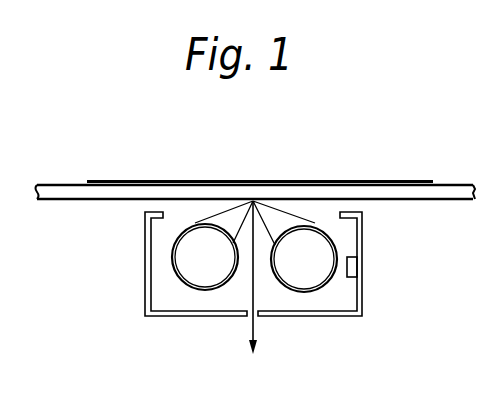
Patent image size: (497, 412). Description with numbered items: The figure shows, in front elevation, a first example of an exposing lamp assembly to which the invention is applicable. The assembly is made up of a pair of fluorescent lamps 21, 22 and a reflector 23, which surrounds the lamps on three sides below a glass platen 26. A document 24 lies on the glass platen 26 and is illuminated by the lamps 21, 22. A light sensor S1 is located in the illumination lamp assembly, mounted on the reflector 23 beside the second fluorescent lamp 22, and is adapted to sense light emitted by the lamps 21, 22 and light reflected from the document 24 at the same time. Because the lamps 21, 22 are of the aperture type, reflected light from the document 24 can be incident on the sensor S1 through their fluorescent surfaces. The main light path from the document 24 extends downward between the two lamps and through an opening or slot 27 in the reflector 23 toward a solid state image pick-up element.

The fluorescent lamp 21 is at (202, 278).
The fluorescent lamp 22 is at (305, 278).
The reflector 23 is at (146, 263).
The document 24 is at (403, 180).
The glass platen 26 is at (433, 201).
The opening or slot 27 is at (250, 317).
The light sensor S1 is at (362, 268).